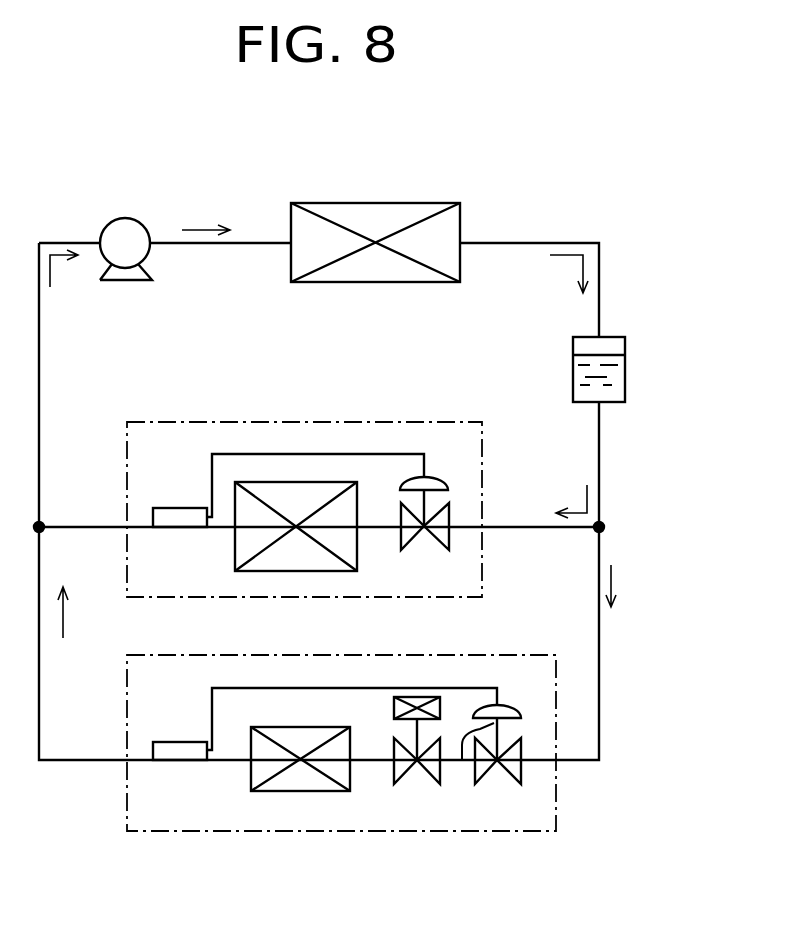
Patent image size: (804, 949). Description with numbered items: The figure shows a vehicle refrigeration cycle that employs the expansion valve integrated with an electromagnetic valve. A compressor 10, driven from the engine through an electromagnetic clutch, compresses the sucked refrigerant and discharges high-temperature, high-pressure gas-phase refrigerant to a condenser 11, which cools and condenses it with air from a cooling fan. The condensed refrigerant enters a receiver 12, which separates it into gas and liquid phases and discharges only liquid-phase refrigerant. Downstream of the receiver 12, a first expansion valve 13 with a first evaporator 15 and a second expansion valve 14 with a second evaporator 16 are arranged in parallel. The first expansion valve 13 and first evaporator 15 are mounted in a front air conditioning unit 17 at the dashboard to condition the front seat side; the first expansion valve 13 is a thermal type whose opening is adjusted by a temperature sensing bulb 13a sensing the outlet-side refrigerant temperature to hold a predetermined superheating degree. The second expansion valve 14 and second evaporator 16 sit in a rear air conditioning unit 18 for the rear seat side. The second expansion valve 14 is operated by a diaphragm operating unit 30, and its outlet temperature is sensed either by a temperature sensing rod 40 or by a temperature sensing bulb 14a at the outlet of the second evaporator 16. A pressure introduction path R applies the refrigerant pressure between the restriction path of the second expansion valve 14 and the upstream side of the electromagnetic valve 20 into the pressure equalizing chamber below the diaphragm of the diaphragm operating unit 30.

The compressor 10 is at (128, 218).
The condenser 11 is at (380, 203).
The receiver 12 is at (586, 337).
The first expansion valve 13 is at (438, 478).
The temperature sensing bulb 13a is at (174, 508).
The second expansion valve 14 is at (502, 786).
The temperature sensing bulb 14a is at (178, 742).
The first evaporator 15 is at (300, 482).
The second evaporator 16 is at (290, 792).
The front air conditioning unit 17 is at (141, 421).
The rear air conditioning unit 18 is at (357, 832).
The electromagnetic valve 20 is at (416, 772).
The diaphragm operating unit 30 is at (513, 712).
The temperature sensing rod 40 is at (304, 799).
The pressure introduction path R is at (495, 720).